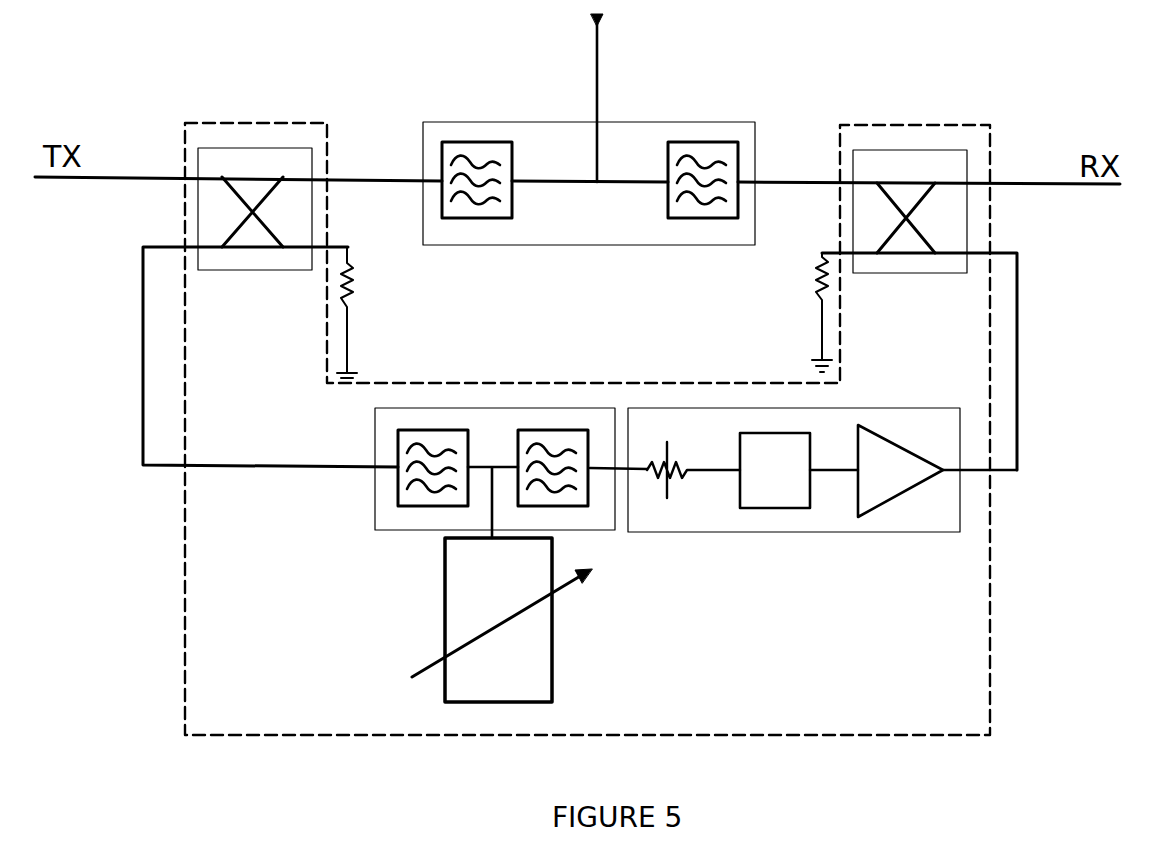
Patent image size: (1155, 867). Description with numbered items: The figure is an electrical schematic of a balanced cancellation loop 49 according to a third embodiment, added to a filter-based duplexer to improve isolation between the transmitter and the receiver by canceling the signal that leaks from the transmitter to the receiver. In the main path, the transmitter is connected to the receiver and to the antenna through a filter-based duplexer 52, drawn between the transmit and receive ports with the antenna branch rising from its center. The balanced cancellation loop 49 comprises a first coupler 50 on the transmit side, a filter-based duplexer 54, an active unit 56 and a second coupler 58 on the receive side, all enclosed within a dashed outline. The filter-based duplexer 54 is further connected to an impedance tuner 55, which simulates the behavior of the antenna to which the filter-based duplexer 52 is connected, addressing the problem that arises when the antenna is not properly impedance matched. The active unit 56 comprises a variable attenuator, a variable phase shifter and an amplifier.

The balanced cancellation loop 49 is at (677, 734).
The first coupler 50 is at (253, 148).
The filter-based duplexer 52 is at (642, 122).
The filter-based duplexer 54 is at (497, 408).
The impedance tuner 55 is at (553, 622).
The active unit 56 is at (793, 532).
The second coupler 58 is at (912, 148).